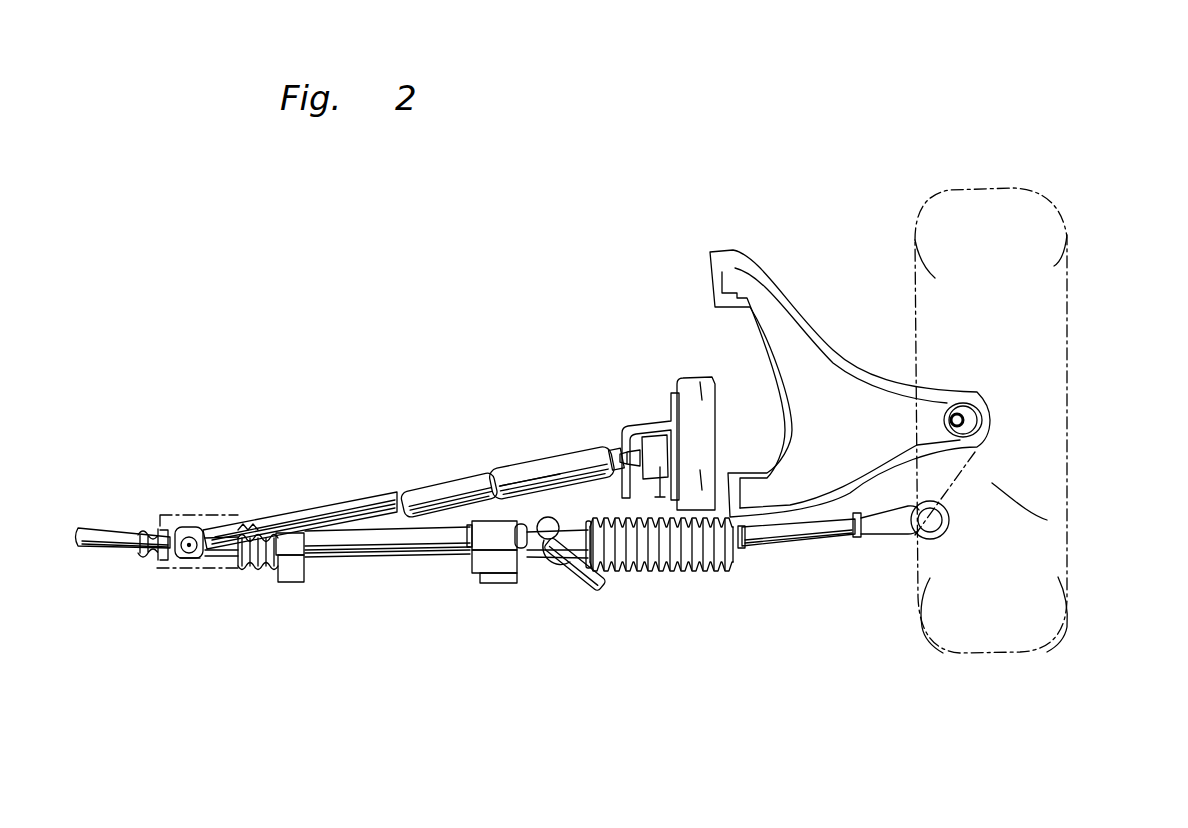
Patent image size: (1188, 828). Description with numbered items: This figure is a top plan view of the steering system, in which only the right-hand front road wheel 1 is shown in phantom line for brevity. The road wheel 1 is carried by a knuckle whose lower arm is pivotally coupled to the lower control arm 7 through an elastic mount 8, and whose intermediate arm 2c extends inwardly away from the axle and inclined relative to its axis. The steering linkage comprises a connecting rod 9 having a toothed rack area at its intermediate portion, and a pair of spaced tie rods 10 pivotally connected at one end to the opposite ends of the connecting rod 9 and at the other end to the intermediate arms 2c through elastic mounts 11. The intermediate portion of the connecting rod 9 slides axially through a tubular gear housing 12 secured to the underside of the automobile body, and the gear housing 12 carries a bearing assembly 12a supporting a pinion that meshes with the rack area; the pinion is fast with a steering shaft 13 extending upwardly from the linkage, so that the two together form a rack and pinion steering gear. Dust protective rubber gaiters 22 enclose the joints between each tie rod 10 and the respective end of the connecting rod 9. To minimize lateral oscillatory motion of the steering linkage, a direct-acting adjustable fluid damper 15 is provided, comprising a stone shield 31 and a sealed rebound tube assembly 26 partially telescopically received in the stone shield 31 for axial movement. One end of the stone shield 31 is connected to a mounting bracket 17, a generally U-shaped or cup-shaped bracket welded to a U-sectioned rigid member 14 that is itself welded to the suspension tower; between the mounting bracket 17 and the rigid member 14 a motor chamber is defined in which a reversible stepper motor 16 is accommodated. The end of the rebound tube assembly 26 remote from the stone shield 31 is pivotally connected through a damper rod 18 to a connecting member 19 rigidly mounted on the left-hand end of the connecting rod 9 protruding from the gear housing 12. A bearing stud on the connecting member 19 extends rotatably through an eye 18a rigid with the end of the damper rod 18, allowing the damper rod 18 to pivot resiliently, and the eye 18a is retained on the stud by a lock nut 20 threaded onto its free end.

The front road wheel 1 is at (1012, 188).
The intermediate arm 2c is at (1047, 520).
The lower control arm 7 is at (800, 304).
The elastic mount 8 is at (985, 410).
The connecting rod 9 is at (233, 565).
The tie rod 10 is at (107, 528).
The elastic mount 11 is at (925, 542).
The tubular gear housing 12 is at (407, 560).
The bearing assembly 12a is at (550, 575).
The steering shaft 13 is at (587, 562).
The U-sectioned rigid member 14 is at (690, 384).
The damper 15 is at (460, 476).
The reversible stepper motor 16 is at (647, 437).
The mounting bracket 17 is at (627, 425).
The damper rod 18 is at (323, 504).
The eye 18a is at (194, 518).
The connecting member 19 is at (163, 562).
The lock nut 20 is at (190, 562).
The dust protective rubber gaiter 22 is at (150, 562).
The sealed rebound tube assembly 26 is at (417, 480).
The stone shield 31 is at (535, 466).